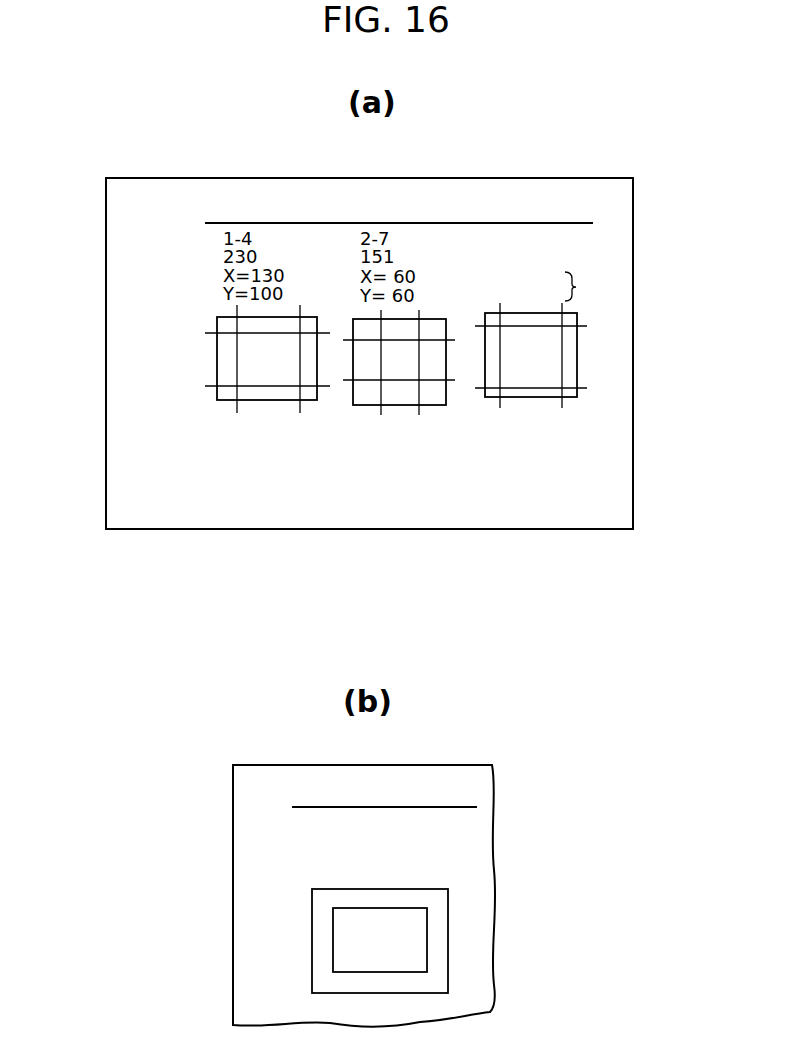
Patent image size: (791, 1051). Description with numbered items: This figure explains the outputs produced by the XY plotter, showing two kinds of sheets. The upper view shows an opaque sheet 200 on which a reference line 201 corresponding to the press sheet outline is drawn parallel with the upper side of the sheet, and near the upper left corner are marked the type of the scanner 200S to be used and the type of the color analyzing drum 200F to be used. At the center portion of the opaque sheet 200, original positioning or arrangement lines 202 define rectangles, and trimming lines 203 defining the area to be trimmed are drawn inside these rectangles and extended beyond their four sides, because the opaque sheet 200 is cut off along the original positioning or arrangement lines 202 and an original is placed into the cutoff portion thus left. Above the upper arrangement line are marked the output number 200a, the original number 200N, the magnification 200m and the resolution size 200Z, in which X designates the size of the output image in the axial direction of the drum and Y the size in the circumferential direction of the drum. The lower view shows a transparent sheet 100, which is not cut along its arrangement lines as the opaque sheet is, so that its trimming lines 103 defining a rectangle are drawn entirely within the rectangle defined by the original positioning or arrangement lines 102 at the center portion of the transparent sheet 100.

The opaque sheet 200 is at (162, 517).
The type of the scanner 200S is at (151, 227).
The reference line 201 is at (338, 222).
The output number 200a is at (515, 218).
The type of the color analyzing drum 200F is at (106, 275).
The original number 200N is at (542, 238).
The magnification 200m is at (537, 257).
The resolution size 200Z is at (576, 287).
The original positioning or arrangement lines 202 is at (577, 353).
The trimming lines 203 is at (563, 373).
The transparent sheet 100 is at (247, 932).
The original positioning or arrangement lines 102 is at (448, 913).
The trimming lines 103 is at (427, 957).